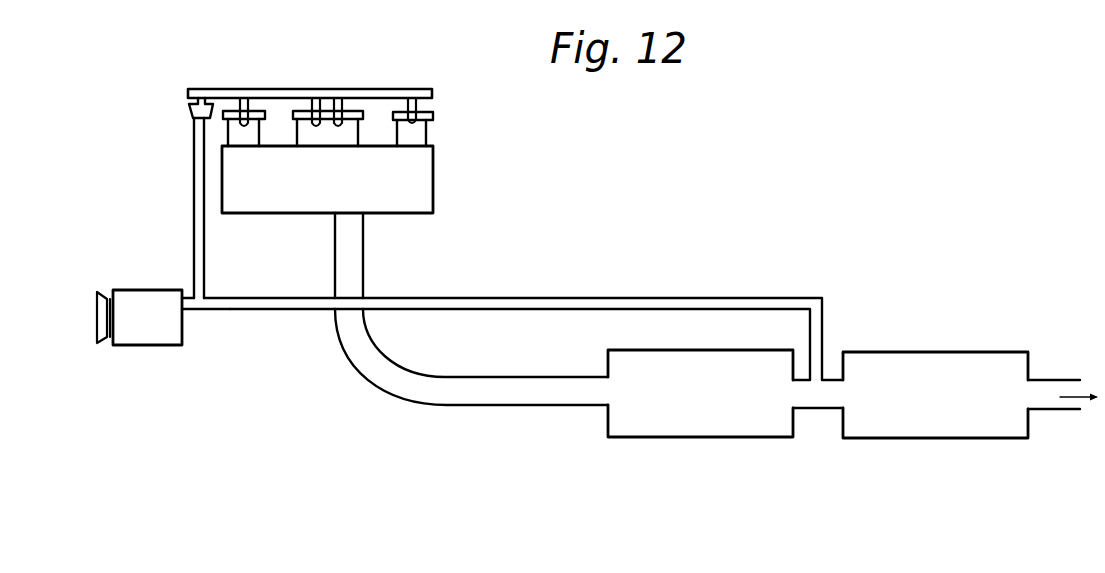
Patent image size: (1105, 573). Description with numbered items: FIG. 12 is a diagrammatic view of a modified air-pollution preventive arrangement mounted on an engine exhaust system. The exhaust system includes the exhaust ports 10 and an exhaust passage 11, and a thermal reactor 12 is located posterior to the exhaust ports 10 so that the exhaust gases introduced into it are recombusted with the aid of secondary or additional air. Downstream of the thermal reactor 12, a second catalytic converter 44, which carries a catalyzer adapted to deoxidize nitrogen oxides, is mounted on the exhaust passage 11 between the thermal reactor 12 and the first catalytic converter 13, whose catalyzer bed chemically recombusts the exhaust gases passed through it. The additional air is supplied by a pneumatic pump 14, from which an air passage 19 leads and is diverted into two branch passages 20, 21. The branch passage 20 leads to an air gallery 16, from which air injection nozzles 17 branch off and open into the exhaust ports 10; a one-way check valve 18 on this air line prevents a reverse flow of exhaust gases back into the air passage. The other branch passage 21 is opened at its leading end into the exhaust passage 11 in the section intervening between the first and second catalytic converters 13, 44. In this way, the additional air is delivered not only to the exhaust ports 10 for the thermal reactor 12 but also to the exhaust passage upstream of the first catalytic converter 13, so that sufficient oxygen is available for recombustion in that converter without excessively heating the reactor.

The exhaust ports 10 is at (426, 137).
The exhaust passage 11 is at (413, 402).
The thermal reactor 12 is at (292, 215).
The catalytic converter 13 is at (887, 440).
The pneumatic pump 14 is at (160, 330).
The air gallery 16 is at (357, 89).
The air injection nozzles 17 is at (418, 101).
The one-way check valve 18 is at (189, 113).
The air passage 19 is at (195, 310).
The branch passage 20 is at (194, 185).
The branch passage 21 is at (272, 311).
The second catalytic converter 44 is at (645, 438).